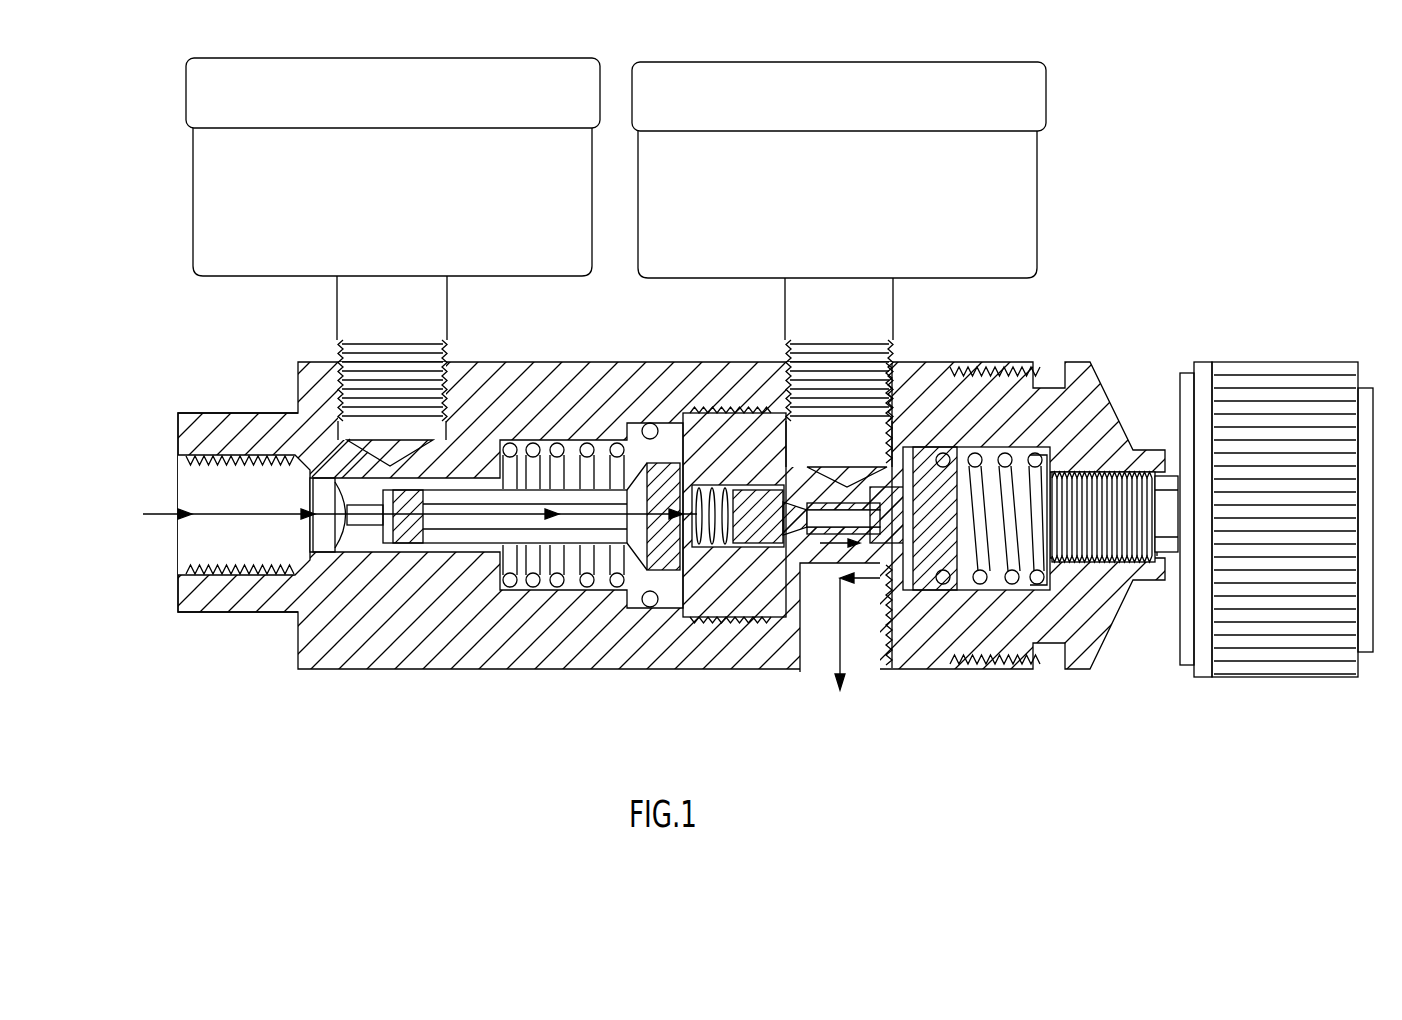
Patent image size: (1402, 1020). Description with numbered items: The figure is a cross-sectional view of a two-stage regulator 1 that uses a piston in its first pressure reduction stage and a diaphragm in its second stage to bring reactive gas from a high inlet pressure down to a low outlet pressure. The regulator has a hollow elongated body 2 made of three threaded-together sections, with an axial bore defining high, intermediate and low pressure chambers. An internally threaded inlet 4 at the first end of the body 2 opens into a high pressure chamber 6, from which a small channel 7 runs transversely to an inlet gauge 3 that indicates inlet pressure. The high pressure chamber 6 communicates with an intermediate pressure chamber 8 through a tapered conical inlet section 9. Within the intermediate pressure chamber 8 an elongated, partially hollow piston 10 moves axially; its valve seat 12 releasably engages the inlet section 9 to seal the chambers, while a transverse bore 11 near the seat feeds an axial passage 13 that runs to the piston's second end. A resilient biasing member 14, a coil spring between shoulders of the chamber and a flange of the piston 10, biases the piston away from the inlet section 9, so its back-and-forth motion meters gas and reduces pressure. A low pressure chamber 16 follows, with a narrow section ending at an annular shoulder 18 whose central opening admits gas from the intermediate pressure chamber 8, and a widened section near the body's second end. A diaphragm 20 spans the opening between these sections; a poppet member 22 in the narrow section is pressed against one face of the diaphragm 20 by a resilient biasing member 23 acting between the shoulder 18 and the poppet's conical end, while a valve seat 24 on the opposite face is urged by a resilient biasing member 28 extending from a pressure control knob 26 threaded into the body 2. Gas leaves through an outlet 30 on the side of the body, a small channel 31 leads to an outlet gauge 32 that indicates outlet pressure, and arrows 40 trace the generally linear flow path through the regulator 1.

The regulator 1 is at (1212, 182).
The body 2 is at (485, 660).
The inlet gauge 3 is at (207, 163).
The inlet 4 is at (190, 470).
The high pressure chamber 6 is at (267, 546).
The small channel 7 is at (335, 462).
The intermediate pressure chamber 8 is at (602, 598).
The tapered conical inlet section 9 is at (470, 430).
The piston 10 is at (598, 500).
The bore 11 is at (447, 545).
The valve seat 12 is at (400, 548).
The passage 13 is at (668, 420).
The resilient biasing member 14 is at (565, 600).
The low pressure chamber 16 is at (722, 488).
The annular shoulder 18 is at (727, 545).
The diaphragm 20 is at (902, 615).
The poppet member 22 is at (803, 560).
The resilient biasing member 23 is at (748, 548).
The valve seat 24 is at (975, 578).
The pressure control knob 26 is at (1293, 380).
The resilient biasing member 28 is at (1093, 446).
The outlet 30 is at (867, 642).
The small channel 31 is at (905, 440).
The outlet gauge 32 is at (1046, 115).
The arrows 40 is at (218, 528).